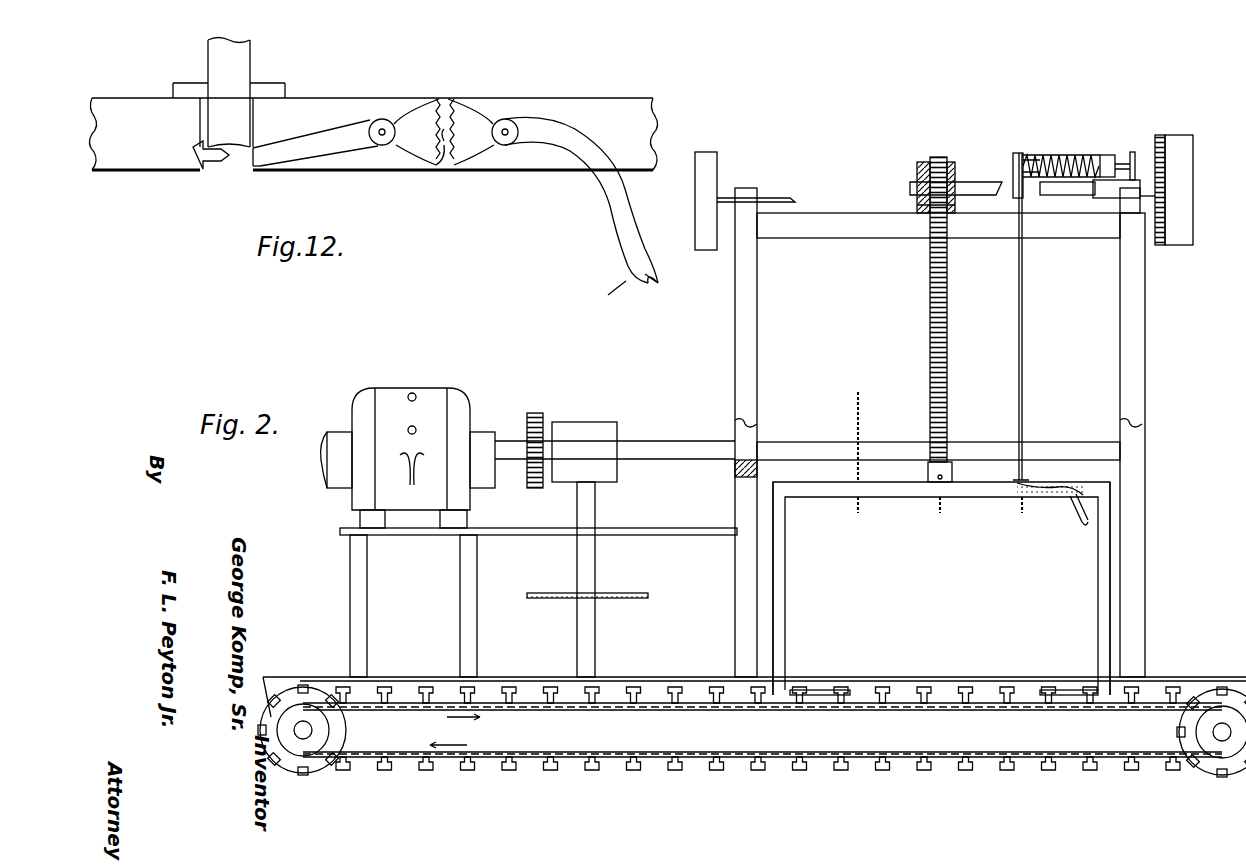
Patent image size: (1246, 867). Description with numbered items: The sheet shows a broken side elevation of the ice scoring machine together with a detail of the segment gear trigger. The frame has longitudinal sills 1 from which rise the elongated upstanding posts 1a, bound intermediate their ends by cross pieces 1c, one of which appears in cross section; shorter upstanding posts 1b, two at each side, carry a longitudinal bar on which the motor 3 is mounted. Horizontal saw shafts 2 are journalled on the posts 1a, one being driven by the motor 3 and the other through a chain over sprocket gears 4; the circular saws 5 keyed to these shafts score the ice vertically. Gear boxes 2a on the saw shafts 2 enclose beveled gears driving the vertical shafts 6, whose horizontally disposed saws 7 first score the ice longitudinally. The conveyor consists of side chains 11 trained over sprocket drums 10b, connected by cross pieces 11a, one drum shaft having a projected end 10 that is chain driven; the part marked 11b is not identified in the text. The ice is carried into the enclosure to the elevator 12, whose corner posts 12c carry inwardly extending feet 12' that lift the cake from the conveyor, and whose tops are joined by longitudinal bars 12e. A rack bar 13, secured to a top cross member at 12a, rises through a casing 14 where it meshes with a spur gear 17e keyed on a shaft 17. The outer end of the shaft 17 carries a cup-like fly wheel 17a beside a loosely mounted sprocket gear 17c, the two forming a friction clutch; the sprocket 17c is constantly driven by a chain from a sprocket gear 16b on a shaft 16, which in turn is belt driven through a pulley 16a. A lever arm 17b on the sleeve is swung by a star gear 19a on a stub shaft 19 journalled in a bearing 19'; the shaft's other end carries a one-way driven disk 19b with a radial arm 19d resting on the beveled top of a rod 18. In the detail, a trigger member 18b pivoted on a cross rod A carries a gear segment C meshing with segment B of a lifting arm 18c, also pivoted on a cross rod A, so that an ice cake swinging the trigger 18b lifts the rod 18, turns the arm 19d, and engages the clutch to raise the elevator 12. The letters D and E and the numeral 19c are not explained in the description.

In FIG. 2, the longitudinal sills 1 is at (1186, 686).
In FIG. 2, the elongated upstanding posts 1a is at (1170, 565).
In FIG. 2, the upstanding posts 1b is at (360, 610).
In FIG. 2, the cross pieces 1c is at (735, 472).
In FIG. 2, the saw shafts 2 is at (666, 448).
In FIG. 2, the gear boxes or housings 2a is at (590, 428).
In FIG. 2, the motor 3 is at (352, 392).
In FIG. 2, the sprocket gears 4 is at (530, 416).
In FIG. 2, the circular saws 5 is at (860, 518).
In FIG. 2, the vertical shafts 6 is at (596, 564).
In FIG. 2, the horizontally disposed saws 7 is at (544, 593).
In FIG. 2, the projected end of drum shaft 10 is at (312, 730).
In FIG. 2, the sprocket drums 10b is at (1210, 764).
In FIG. 2, the side chains of the conveyor 11 is at (654, 770).
In FIG. 2, the cross pieces of the conveyor 11a is at (708, 770).
In FIG. 2, the conveyor carriers 11b is at (832, 770).
In FIG. 12, the elevator 12 is at (373, 134).
In FIG. 2, the elevator 12 is at (941, 588).
In FIG. 2, the rack bar securement 12a is at (926, 470).
In FIG. 2, the corner posts 12c is at (785, 605).
In FIG. 2, the longitudinal bars 12e is at (864, 498).
In FIG. 2, the flanges or feet 12' is at (944, 662).
In FIG. 2, the rack bar 13 is at (930, 322).
In FIG. 2, the casing 14 is at (917, 174).
In FIG. 2, the shaft 16 is at (766, 198).
In FIG. 2, the pulley 16a is at (714, 172).
In FIG. 2, the sprocket gear 16b is at (1146, 210).
In FIG. 2, the shaft 17 is at (972, 182).
In FIG. 2, the cup-like fly wheel 17a is at (1184, 136).
In FIG. 2, the lever arm 17b is at (1140, 184).
In FIG. 2, the sprocket gear 17c is at (1160, 140).
In FIG. 2, the spur gear 17e is at (915, 204).
In FIG. 12, the rod 18 is at (250, 54).
In FIG. 2, the rod 18 is at (1023, 290).
In FIG. 12, the trigger member 18b is at (598, 192).
In FIG. 2, the trigger member 18b is at (1082, 524).
In FIG. 12, the lifting arm 18c is at (315, 146).
In FIG. 2, the lifting arm 18c is at (1038, 484).
In FIG. 2, the stub shaft 19 is at (1085, 199).
In FIG. 2, the bearing 19' is at (1106, 144).
In FIG. 2, the star gear 19a is at (1132, 152).
In FIG. 2, the disk 19b is at (1024, 154).
In FIG. 2, the spring 19c is at (1068, 154).
In FIG. 2, the radial arm 19d is at (1013, 182).
In FIG. 12, the cross rods A is at (382, 130).
In FIG. 12, the gear segment B is at (424, 158).
In FIG. 12, the gear segment C is at (456, 156).
In FIG. 12, the finger tip D is at (642, 284).
In FIG. 12, the wedge E is at (222, 154).